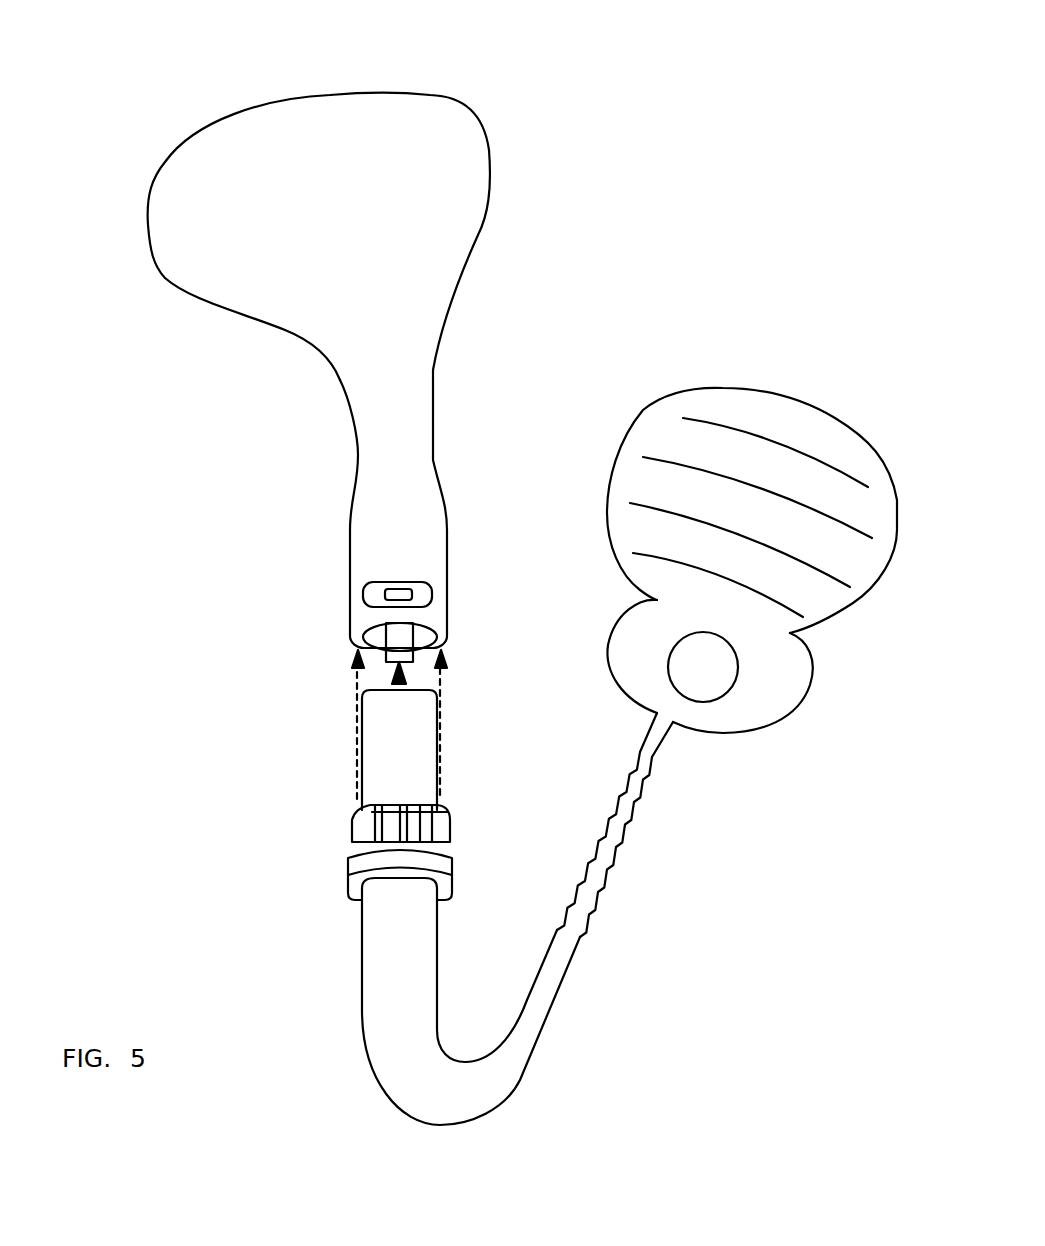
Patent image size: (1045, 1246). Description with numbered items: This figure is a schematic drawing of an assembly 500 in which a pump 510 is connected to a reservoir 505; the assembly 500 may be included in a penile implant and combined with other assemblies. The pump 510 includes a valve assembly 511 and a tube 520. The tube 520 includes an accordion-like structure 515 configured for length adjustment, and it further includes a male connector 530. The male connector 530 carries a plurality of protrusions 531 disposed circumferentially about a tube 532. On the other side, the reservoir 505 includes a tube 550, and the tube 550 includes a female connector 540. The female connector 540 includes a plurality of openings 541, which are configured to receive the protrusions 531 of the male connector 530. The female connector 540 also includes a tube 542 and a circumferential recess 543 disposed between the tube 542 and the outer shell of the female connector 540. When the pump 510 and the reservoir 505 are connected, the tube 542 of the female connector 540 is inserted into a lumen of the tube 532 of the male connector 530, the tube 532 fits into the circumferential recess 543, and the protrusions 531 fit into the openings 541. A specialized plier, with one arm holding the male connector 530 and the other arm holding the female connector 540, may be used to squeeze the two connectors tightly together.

The assembly 500 is at (98, 153).
The reservoir 505 is at (443, 160).
The pump 510 is at (785, 428).
The valve assembly 511 is at (760, 685).
The accordion-like structure 515 is at (620, 850).
The tube 520 is at (530, 1018).
The male connector 530 is at (350, 862).
The protrusions 531 is at (415, 820).
The tube 532 is at (390, 740).
The female connector 540 is at (371, 683).
The openings 541 is at (436, 598).
The tube 542 is at (360, 662).
The circumferential recess 543 is at (432, 640).
The tube 550 is at (390, 500).